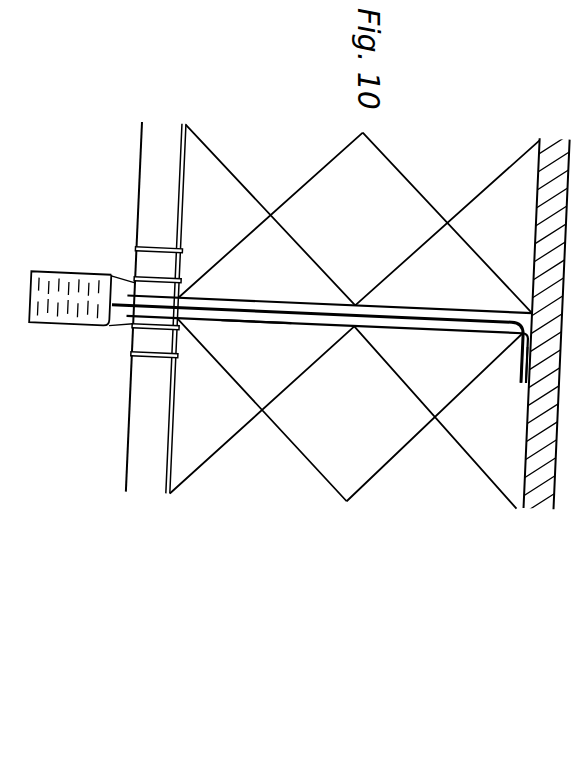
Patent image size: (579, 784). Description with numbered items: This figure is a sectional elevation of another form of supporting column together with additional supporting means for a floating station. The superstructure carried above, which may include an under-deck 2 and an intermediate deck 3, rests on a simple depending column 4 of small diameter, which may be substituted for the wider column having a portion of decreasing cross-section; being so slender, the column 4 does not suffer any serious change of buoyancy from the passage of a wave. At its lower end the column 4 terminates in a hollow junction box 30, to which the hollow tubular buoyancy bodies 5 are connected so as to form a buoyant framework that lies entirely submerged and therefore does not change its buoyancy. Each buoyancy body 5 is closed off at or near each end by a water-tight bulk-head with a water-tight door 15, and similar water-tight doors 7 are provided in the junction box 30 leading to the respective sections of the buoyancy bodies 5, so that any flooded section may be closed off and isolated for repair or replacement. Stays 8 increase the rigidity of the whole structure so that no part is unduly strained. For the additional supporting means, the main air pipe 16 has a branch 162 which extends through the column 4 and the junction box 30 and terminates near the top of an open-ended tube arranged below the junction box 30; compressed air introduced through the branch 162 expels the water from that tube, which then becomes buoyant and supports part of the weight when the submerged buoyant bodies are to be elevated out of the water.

The under-deck 2 is at (553, 260).
The intermediate deck 3 is at (60, 327).
The supporting column 4 is at (333, 323).
The buoyancy body 5 is at (141, 164).
The water-tight door 7 is at (157, 280).
The stay 8 is at (467, 447).
The water-tight door 15 is at (163, 247).
The main air pipe 16 is at (520, 377).
The branch pipe 162 is at (268, 313).
The junction box 30 is at (183, 293).